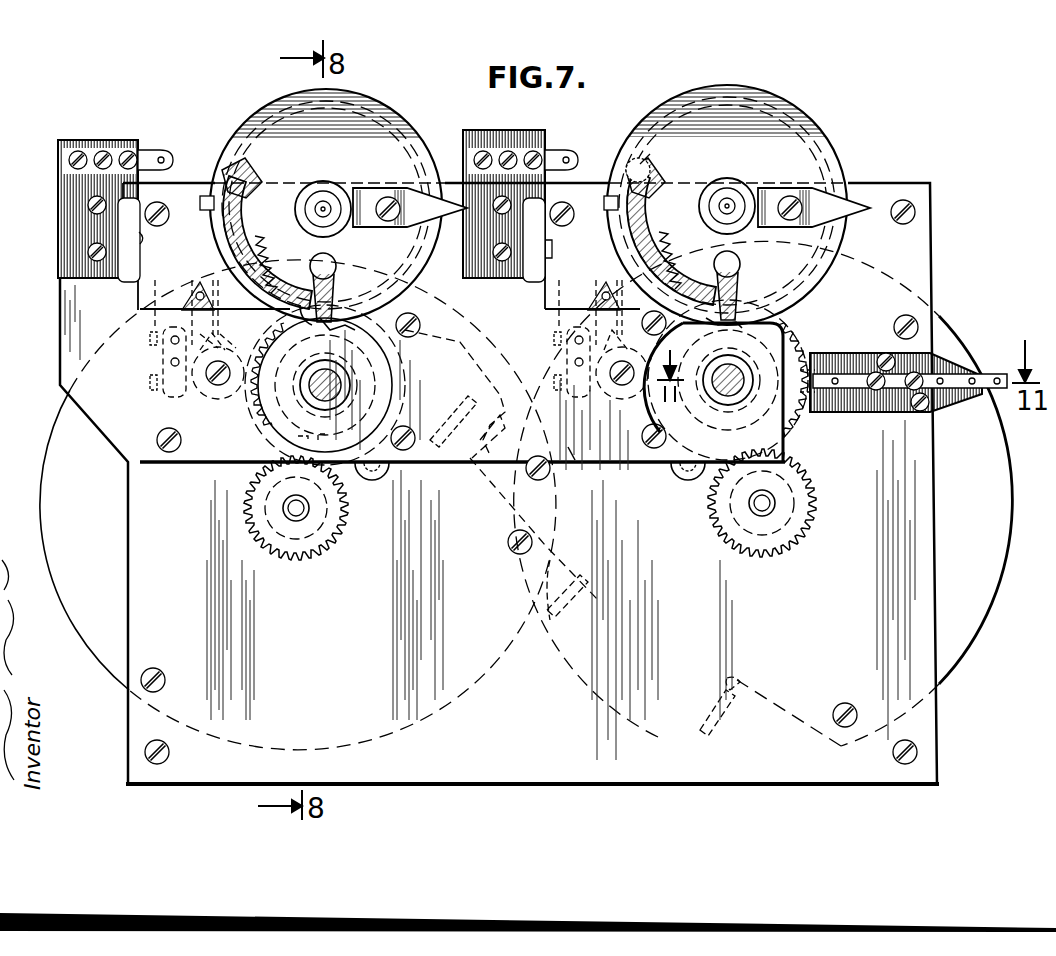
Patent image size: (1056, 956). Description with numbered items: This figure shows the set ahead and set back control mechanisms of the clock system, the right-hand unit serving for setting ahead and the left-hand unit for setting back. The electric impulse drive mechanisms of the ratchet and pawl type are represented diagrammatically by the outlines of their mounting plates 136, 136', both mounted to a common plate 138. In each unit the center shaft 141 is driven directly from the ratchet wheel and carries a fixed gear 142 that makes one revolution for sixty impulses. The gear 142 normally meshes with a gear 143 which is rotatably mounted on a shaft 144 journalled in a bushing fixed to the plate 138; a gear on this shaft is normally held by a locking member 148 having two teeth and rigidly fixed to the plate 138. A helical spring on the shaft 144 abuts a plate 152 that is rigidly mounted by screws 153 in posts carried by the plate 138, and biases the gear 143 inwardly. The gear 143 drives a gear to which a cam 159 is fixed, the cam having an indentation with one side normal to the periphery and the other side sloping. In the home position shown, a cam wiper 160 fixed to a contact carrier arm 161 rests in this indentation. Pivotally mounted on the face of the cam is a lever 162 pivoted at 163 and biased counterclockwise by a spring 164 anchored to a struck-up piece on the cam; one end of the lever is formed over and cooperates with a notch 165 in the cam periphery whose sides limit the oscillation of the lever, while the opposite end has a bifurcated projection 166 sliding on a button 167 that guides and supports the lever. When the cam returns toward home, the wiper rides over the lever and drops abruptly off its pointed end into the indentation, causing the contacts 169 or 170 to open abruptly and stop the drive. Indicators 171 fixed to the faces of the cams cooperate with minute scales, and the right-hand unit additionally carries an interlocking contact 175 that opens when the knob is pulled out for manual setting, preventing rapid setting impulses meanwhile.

The mounting plate 136 is at (763, 493).
The mounting plate 136' is at (319, 505).
The plate 138 is at (922, 254).
The center shaft 141 is at (300, 510).
The gear 142 is at (348, 510).
The gear 143 is at (398, 372).
The shaft 144 is at (318, 393).
The locking member 148 is at (392, 470).
The plate 152 is at (572, 455).
The screws 153 is at (421, 325).
The cam 159 is at (392, 110).
The cam wiper 160 is at (200, 212).
The contact carrier arm 161 is at (198, 260).
The lever 162 is at (506, 205).
The pivot 163 is at (337, 266).
The spring 164 is at (469, 240).
The notch 165 is at (284, 342).
The bifurcated projection 166 is at (638, 162).
The button 167 is at (652, 168).
The contact 169 is at (150, 236).
The contact 170 is at (586, 238).
The indicator 171 is at (368, 192).
The interlocking contact 175 is at (826, 358).